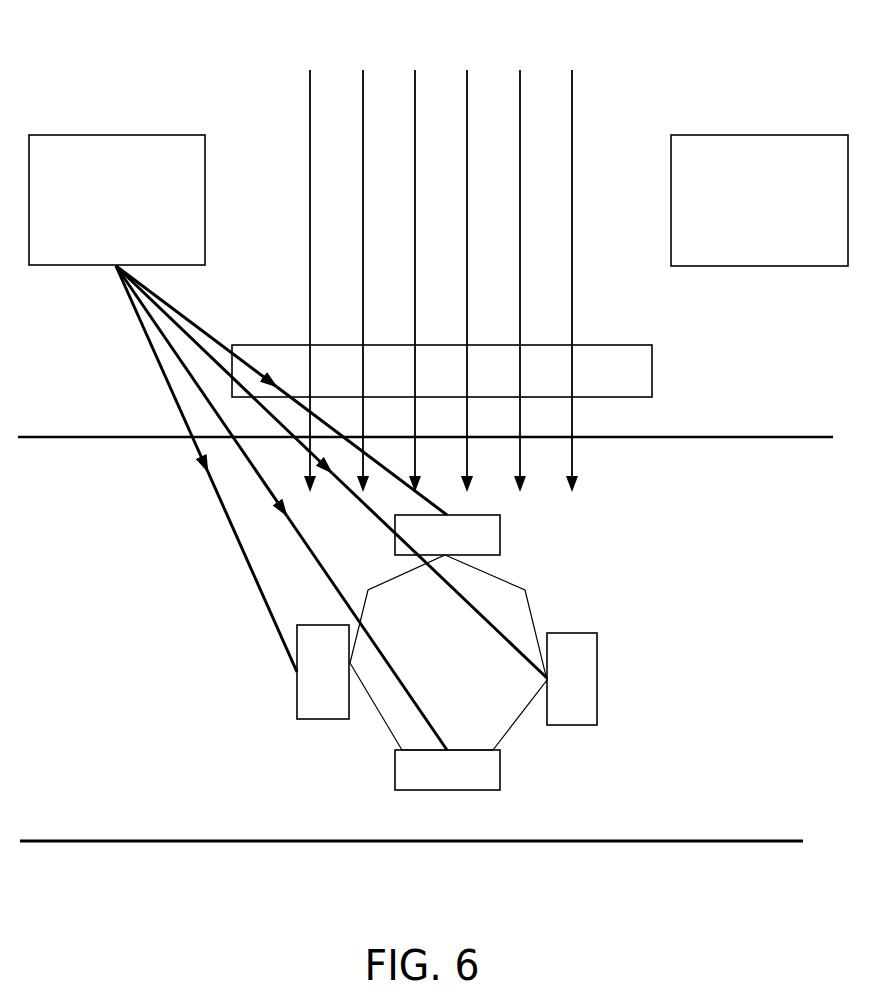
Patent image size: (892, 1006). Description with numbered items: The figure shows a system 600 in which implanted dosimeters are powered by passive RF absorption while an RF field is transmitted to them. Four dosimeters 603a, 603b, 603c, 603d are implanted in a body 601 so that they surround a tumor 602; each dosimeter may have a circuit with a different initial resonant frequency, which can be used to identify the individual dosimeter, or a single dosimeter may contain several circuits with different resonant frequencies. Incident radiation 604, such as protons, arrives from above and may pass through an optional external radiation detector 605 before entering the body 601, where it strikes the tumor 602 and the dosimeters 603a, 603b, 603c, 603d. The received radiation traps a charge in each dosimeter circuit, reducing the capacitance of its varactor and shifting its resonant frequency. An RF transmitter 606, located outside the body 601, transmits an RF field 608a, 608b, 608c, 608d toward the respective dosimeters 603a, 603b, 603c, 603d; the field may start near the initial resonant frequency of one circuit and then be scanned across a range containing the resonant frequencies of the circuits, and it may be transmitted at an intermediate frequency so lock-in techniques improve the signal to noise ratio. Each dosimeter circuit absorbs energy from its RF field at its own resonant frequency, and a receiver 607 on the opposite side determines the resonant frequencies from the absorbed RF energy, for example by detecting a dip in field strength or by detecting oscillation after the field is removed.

The system 600 is at (103, 28).
The body 601 is at (425, 462).
The tumor 602 is at (448, 652).
The dosimeter 603a is at (447, 770).
The dosimeter 603b is at (323, 672).
The dosimeter 603c is at (447, 535).
The dosimeter 603d is at (572, 679).
The incident radiation 604 is at (441, 281).
The external radiation detector 605 is at (442, 371).
The RF transmitter 606 is at (117, 200).
The receiver 607 is at (759, 200).
The RF field 608a is at (172, 350).
The RF field 608b is at (170, 390).
The RF field 608c is at (182, 315).
The RF field 608d is at (178, 326).